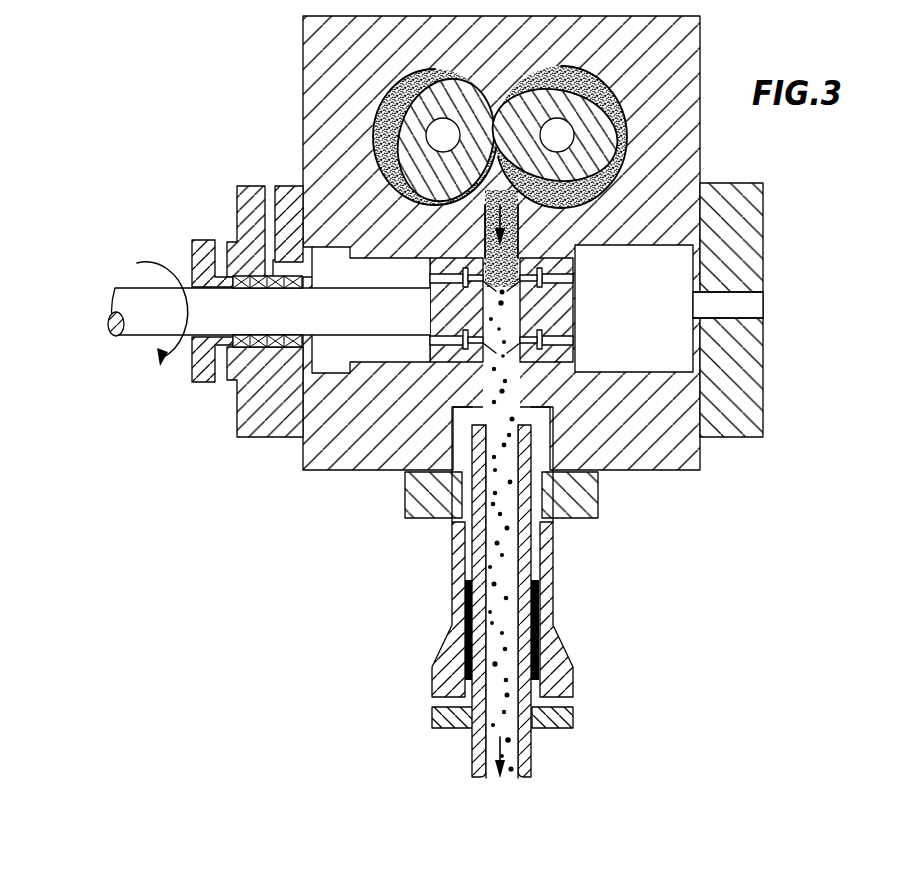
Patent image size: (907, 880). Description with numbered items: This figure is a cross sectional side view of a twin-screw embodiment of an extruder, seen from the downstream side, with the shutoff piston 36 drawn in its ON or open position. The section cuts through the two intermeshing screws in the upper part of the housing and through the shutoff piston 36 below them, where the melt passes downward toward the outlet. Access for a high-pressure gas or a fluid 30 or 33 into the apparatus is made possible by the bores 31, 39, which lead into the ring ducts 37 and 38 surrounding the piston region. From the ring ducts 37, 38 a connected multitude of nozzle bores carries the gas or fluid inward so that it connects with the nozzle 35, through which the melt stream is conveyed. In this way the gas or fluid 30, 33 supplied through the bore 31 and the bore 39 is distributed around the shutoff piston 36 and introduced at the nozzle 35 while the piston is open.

The high-pressure gas or fluid 30 is at (270, 158).
The bore 31 is at (270, 233).
The high-pressure gas or fluid 33 is at (805, 305).
The nozzle 35 is at (515, 230).
The shutoff piston 36 is at (440, 305).
The ring duct 37 is at (540, 278).
The ring duct 38 is at (545, 342).
The bore 39 is at (437, 338).